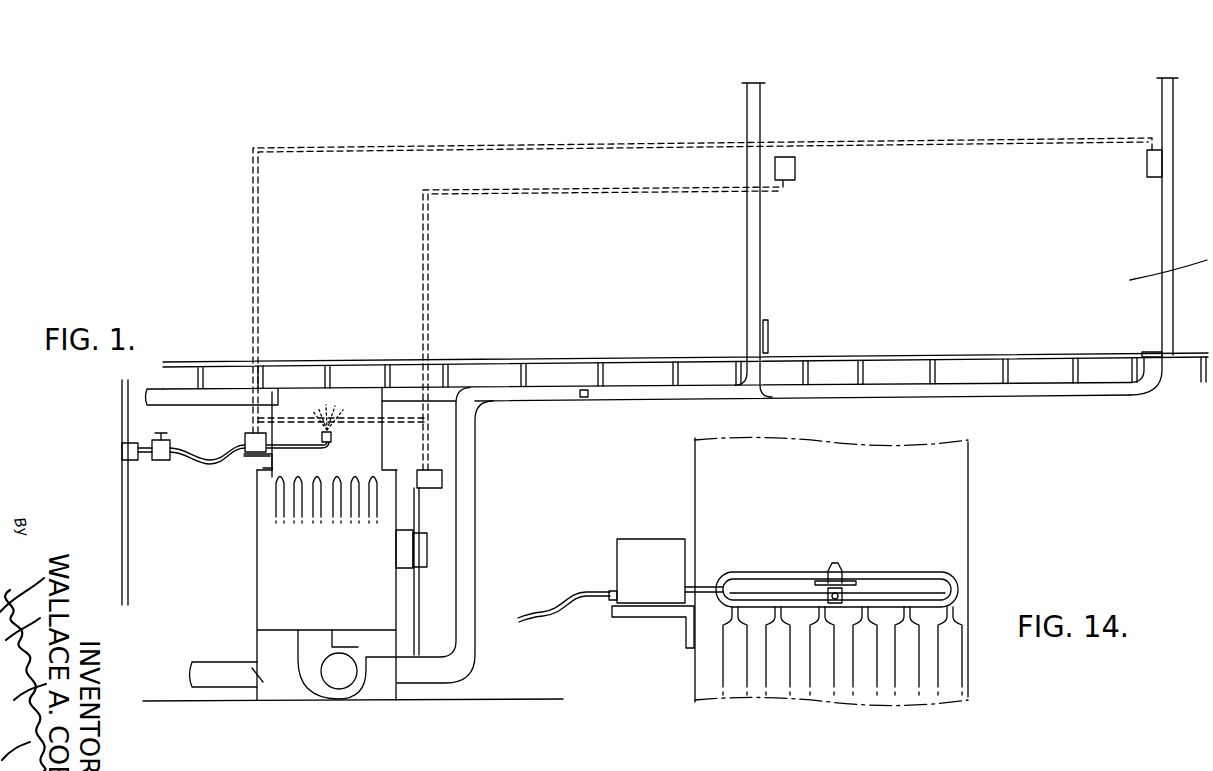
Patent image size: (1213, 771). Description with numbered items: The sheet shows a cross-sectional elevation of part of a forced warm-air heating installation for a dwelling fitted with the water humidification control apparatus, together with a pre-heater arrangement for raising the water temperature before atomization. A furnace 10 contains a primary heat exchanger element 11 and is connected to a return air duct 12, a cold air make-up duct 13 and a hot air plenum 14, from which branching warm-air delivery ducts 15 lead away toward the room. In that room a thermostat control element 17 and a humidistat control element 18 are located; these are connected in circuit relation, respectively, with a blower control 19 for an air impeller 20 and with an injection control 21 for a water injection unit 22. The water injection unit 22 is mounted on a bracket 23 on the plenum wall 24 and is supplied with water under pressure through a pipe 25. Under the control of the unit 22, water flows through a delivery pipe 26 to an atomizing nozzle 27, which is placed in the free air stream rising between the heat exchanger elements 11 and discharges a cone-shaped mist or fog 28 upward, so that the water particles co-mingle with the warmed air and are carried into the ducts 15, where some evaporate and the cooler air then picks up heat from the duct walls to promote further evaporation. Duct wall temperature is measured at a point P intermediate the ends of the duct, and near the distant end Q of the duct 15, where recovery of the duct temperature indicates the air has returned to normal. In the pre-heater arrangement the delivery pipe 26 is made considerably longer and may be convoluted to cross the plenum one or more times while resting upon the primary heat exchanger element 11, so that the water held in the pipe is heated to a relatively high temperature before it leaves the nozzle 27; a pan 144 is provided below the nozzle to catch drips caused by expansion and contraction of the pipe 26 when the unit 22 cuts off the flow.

In FIG. 1, the furnace 10 is at (257, 580).
In FIG. 1, the primary heat exchanger element 11 is at (332, 503).
In FIG. 14, the primary heat exchanger element 11 is at (905, 668).
In FIG. 1, the return air duct 12 is at (466, 647).
In FIG. 1, the cold air make-up duct 13 is at (222, 668).
In FIG. 1, the hot air plenum 14 is at (304, 405).
In FIG. 1, the warm-air delivery ducts 15 is at (228, 395).
In FIG. 1, the thermostat control element 17 is at (796, 168).
In FIG. 1, the humidistat control element 18 is at (1147, 166).
In FIG. 1, the blower control 19 is at (428, 553).
In FIG. 1, the air impeller 20 is at (345, 648).
In FIG. 1, the injection control 21 is at (442, 473).
In FIG. 1, the water injection unit 22 is at (250, 452).
In FIG. 14, the water injection unit 22 is at (661, 552).
In FIG. 1, the bracket 23 is at (266, 458).
In FIG. 14, the bracket 23 is at (666, 618).
In FIG. 1, the plenum wall 24 is at (274, 410).
In FIG. 1, the pipe 25 is at (195, 456).
In FIG. 14, the pipe 25 is at (582, 592).
In FIG. 1, the pipe 26 is at (305, 452).
In FIG. 14, the pipe 26 is at (918, 586).
In FIG. 1, the atomizing nozzle 27 is at (333, 436).
In FIG. 14, the atomizing nozzle 27 is at (833, 565).
In FIG. 1, the cone-shaped mist or fog 28 is at (336, 406).
In FIG. 14, the pan 144 is at (851, 583).
In FIG. 1, the point P is at (588, 398).
In FIG. 1, the distant end Q is at (768, 334).